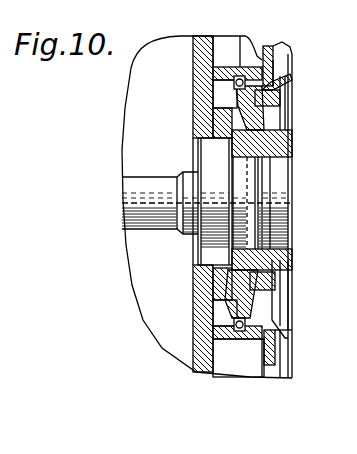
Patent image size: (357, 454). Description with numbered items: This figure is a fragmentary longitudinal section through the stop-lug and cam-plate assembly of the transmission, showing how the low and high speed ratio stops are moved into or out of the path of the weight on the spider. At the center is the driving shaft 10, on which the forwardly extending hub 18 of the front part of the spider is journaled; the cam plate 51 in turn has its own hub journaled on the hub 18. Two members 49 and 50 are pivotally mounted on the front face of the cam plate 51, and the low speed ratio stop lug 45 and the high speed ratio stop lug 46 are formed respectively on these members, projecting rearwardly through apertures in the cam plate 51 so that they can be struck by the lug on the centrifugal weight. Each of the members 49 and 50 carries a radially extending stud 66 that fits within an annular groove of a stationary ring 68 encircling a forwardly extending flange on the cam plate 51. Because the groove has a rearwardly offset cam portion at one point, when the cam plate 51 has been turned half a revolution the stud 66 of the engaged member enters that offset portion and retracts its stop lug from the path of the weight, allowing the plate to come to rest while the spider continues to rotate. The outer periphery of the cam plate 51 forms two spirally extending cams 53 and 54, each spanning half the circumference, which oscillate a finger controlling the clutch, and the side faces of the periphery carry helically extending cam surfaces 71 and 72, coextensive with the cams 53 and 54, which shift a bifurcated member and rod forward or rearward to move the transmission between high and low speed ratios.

The driving shaft 10 is at (280, 204).
The hub 18 is at (280, 182).
The low speed ratio stop lug 45 is at (267, 282).
The high speed ratio stop lug 46 is at (278, 100).
The member 49 is at (232, 305).
The member 50 is at (238, 99).
The cam plate 51 is at (273, 305).
The cam 53 is at (270, 43).
The cam 54 is at (270, 365).
The stud 66 is at (234, 78).
The stationary ring 68 is at (242, 74).
The cam surface 71 is at (263, 58).
The cam surface 72 is at (266, 344).